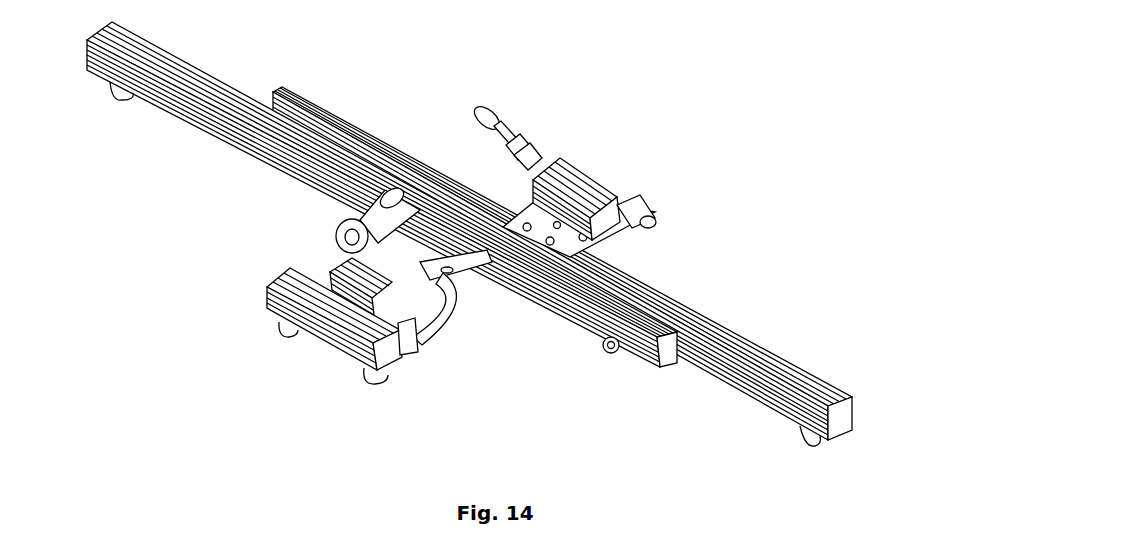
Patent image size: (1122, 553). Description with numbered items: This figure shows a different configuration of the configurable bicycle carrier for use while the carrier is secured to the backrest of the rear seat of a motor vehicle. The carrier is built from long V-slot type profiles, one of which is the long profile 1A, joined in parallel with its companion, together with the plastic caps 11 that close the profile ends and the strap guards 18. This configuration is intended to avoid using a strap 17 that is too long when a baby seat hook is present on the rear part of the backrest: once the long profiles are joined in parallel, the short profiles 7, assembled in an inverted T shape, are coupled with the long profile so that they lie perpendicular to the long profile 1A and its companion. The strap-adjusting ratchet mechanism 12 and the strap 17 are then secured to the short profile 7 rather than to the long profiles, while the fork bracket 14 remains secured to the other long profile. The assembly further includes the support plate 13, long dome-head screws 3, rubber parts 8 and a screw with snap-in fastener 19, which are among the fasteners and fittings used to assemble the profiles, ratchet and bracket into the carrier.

The long profile 1A is at (663, 299).
The long dome-head screw 3 is at (607, 356).
The short profile 7 is at (335, 282).
The rubber part 8 is at (122, 103).
The plastic cap 11 is at (845, 422).
The strap-adjusting ratchet 12 is at (445, 264).
The support plate 13 is at (546, 245).
The fork bracket 14 is at (590, 171).
The strap 17 is at (438, 312).
The strap guard 18 is at (150, 53).
The screw with snap-in fastener 19 is at (498, 122).